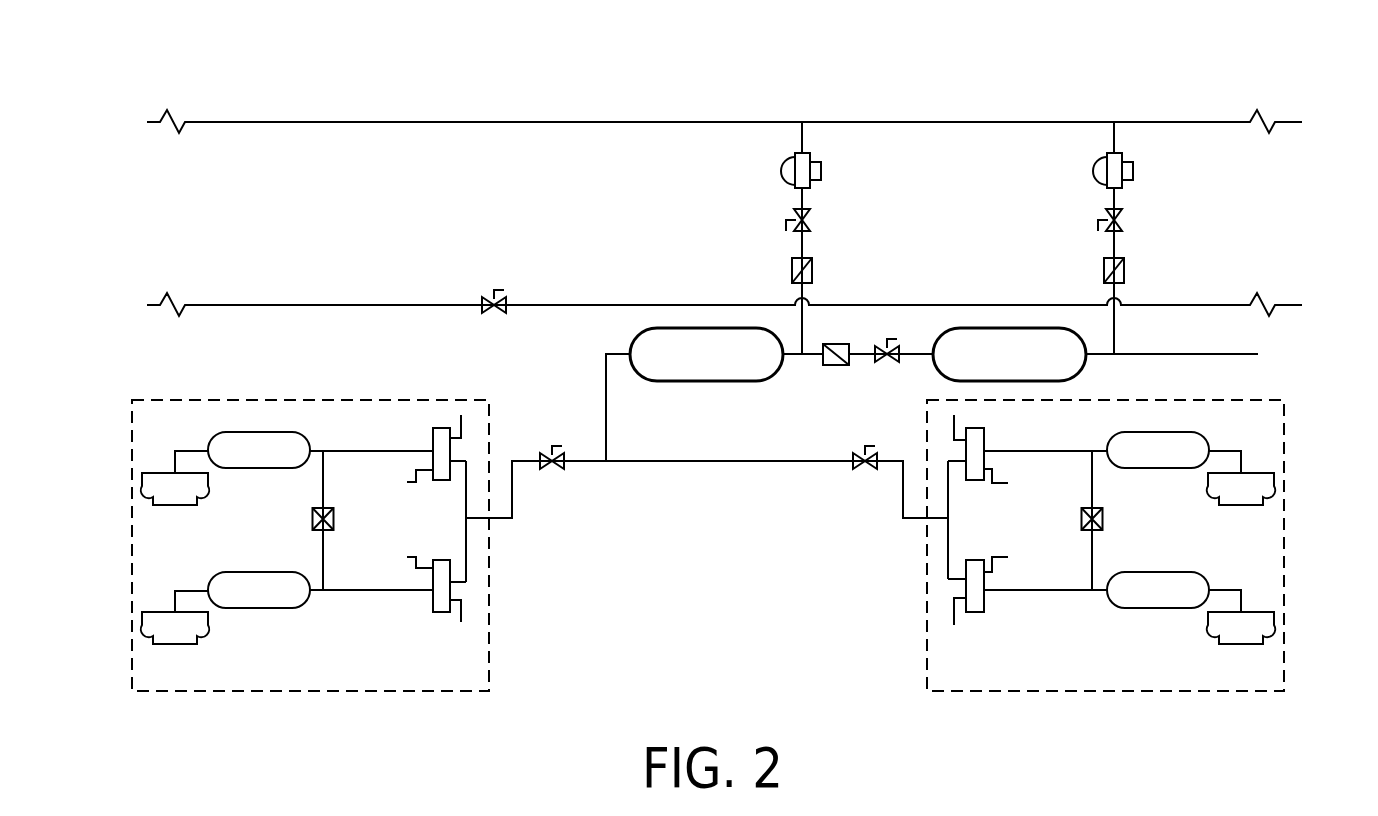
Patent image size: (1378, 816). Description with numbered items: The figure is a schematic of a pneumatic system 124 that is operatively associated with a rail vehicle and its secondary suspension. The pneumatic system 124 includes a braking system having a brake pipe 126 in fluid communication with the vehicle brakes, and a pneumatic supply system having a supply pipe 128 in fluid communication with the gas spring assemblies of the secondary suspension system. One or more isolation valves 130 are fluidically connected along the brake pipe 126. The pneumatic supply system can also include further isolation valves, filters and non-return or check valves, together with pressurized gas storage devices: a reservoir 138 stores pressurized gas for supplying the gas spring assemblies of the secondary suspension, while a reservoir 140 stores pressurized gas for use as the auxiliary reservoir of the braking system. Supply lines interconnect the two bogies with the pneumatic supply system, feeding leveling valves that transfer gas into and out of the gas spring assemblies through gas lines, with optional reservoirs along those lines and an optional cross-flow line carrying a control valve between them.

The pneumatic system 124 is at (1027, 90).
The brake pipe 126 is at (376, 305).
The supply pipe 128 is at (376, 122).
The isolation valve 130 is at (492, 293).
The reservoir 138 is at (684, 368).
The reservoir 140 is at (988, 368).